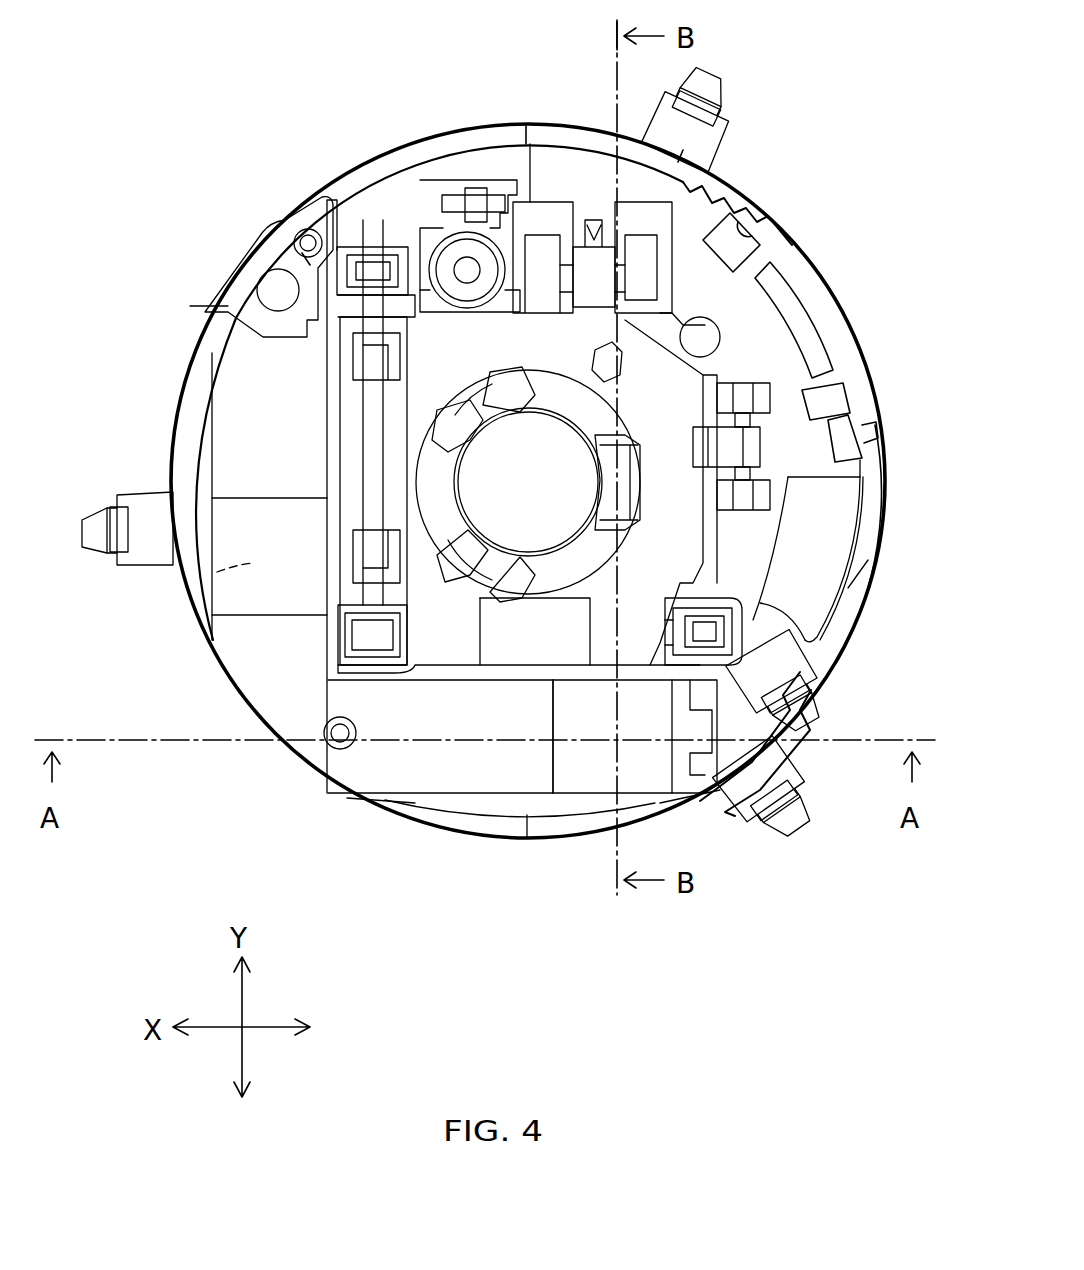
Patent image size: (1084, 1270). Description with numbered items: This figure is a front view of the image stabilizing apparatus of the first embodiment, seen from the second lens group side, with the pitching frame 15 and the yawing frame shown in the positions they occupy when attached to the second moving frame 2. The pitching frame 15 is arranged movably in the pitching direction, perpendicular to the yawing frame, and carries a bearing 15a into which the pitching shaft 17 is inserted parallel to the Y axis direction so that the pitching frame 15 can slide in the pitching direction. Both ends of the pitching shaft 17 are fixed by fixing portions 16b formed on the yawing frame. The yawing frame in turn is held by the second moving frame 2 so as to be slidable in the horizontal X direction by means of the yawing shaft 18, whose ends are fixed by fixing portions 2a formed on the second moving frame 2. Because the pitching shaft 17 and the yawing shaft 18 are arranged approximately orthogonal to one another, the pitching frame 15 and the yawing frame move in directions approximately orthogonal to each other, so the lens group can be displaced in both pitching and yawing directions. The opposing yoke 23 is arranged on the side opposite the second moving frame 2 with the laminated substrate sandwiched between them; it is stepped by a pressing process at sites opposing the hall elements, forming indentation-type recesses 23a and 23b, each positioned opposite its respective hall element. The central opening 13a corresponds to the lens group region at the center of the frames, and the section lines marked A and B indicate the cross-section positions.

The second moving frame 2 is at (376, 163).
The fixing portions 2a is at (755, 617).
The rotor shaft opening 13a is at (548, 443).
The pitching frame 15 is at (672, 523).
The bearing 15a is at (343, 357).
The fixing portions 16b is at (372, 248).
The pitching shaft 17 is at (372, 430).
The yawing shaft 18 is at (713, 632).
The opposing yoke 23 is at (365, 763).
The indentation-type recess 23a is at (213, 583).
The indentation-type recess 23b is at (583, 762).